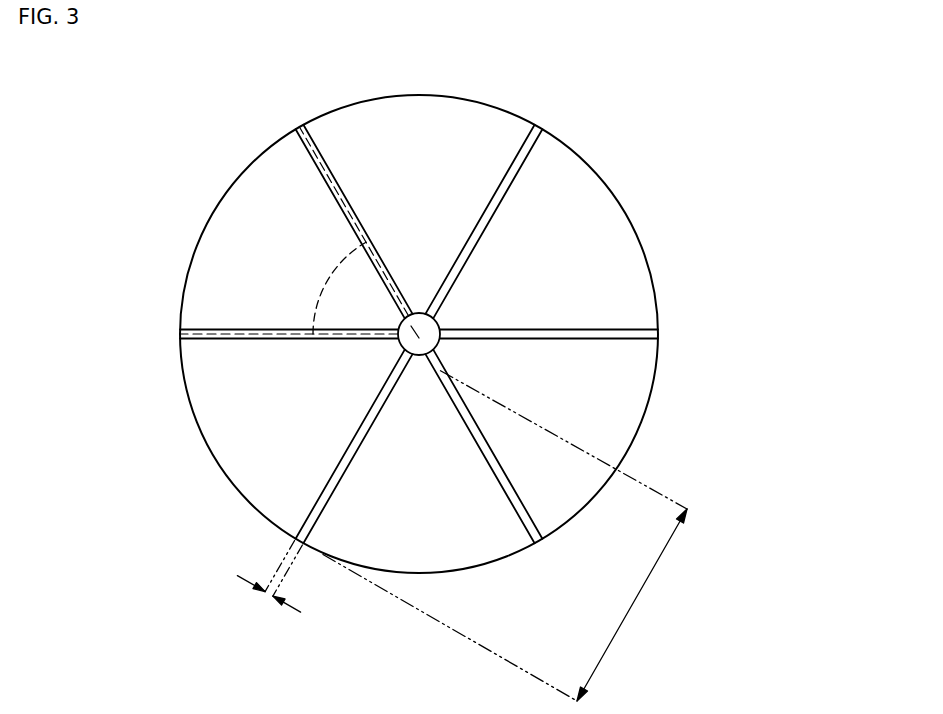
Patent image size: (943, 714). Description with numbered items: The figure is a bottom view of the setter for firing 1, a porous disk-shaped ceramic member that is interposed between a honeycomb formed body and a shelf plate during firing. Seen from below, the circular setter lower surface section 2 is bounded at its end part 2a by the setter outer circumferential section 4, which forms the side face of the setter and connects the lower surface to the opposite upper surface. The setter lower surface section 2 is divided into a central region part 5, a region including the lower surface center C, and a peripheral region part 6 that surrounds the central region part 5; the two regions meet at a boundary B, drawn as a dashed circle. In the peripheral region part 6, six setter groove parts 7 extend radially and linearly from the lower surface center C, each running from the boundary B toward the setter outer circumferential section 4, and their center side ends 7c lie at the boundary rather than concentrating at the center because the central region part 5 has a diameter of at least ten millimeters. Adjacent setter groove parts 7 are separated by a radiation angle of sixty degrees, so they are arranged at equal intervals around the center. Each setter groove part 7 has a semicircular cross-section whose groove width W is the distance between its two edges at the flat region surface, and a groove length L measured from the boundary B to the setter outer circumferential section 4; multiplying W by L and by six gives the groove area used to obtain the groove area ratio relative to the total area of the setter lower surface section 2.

The setter for firing 1 is at (216, 141).
The setter lower surface section 2 is at (605, 425).
The end part of the setter lower surface section 2a is at (650, 267).
The setter outer circumferential section 4 is at (463, 334).
The central region part 5 is at (400, 319).
The peripheral region part 6 is at (443, 107).
The setter groove part 7 is at (419, 334).
The center side end of the setter groove part 7c is at (440, 344).
The lower surface center C is at (418, 336).
The boundary B is at (438, 322).
The groove length L is at (634, 603).
The groove width W is at (268, 598).